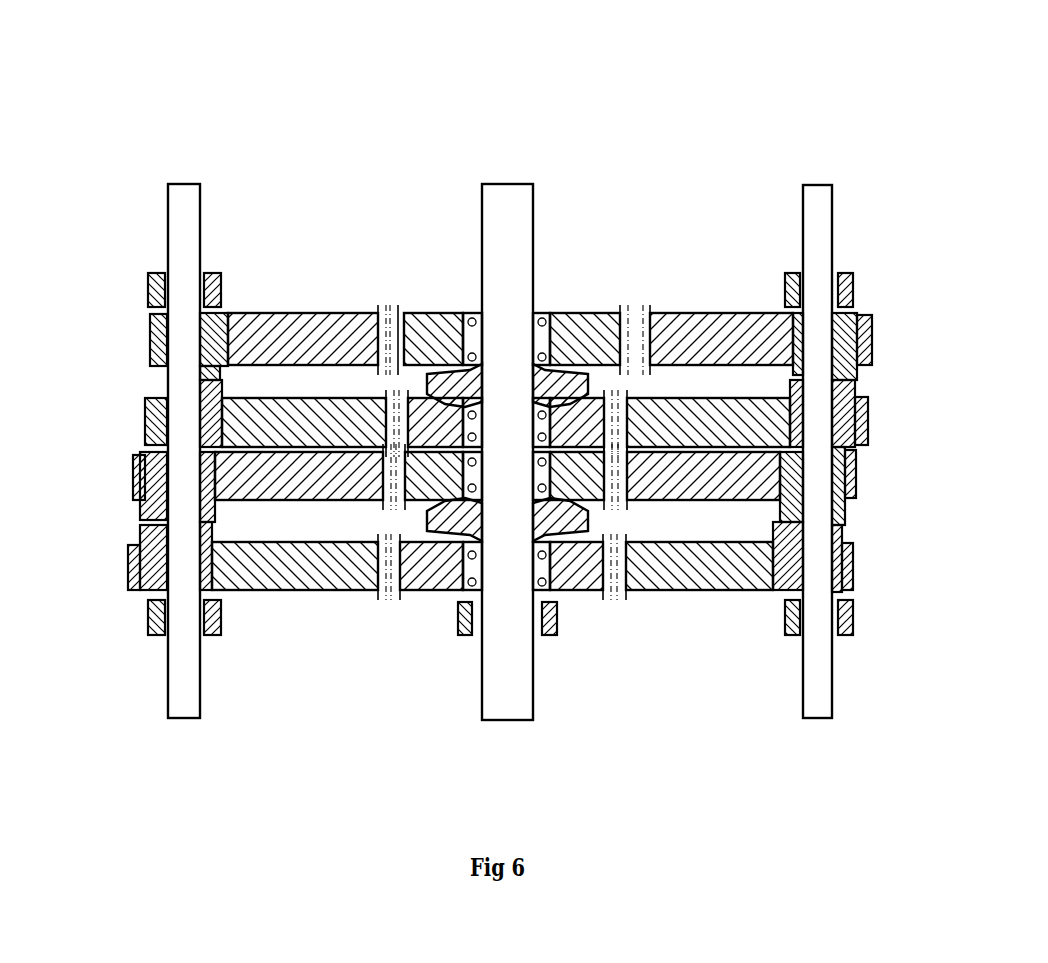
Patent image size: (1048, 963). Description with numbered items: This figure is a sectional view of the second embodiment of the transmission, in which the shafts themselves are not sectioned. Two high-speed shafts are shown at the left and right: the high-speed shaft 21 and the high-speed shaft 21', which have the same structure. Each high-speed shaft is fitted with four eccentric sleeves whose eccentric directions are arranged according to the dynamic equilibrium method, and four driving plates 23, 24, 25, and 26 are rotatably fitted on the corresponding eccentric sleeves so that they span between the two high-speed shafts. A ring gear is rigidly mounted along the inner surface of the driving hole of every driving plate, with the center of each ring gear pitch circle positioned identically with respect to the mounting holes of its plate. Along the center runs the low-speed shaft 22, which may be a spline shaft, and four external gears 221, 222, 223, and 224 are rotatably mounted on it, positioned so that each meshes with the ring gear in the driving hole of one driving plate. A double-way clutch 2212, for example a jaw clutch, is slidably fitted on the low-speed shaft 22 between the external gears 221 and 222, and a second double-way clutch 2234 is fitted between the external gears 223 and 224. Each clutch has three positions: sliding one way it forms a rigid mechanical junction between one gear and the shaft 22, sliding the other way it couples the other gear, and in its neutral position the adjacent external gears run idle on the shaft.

The high-speed shaft 21 is at (178, 383).
The high-speed shaft 21' is at (821, 383).
The low-speed shaft 22 is at (500, 195).
The external gear 221 is at (565, 313).
The external gear 222 is at (590, 395).
The double-way clutch 2212 is at (424, 370).
The external gear 223 is at (572, 543).
The double-way clutch 2234 is at (453, 543).
The external gear 224 is at (603, 585).
The driving plate 23 is at (873, 317).
The driving plate 24 is at (868, 420).
The driving plate 25 is at (853, 480).
The driving plate 26 is at (852, 567).